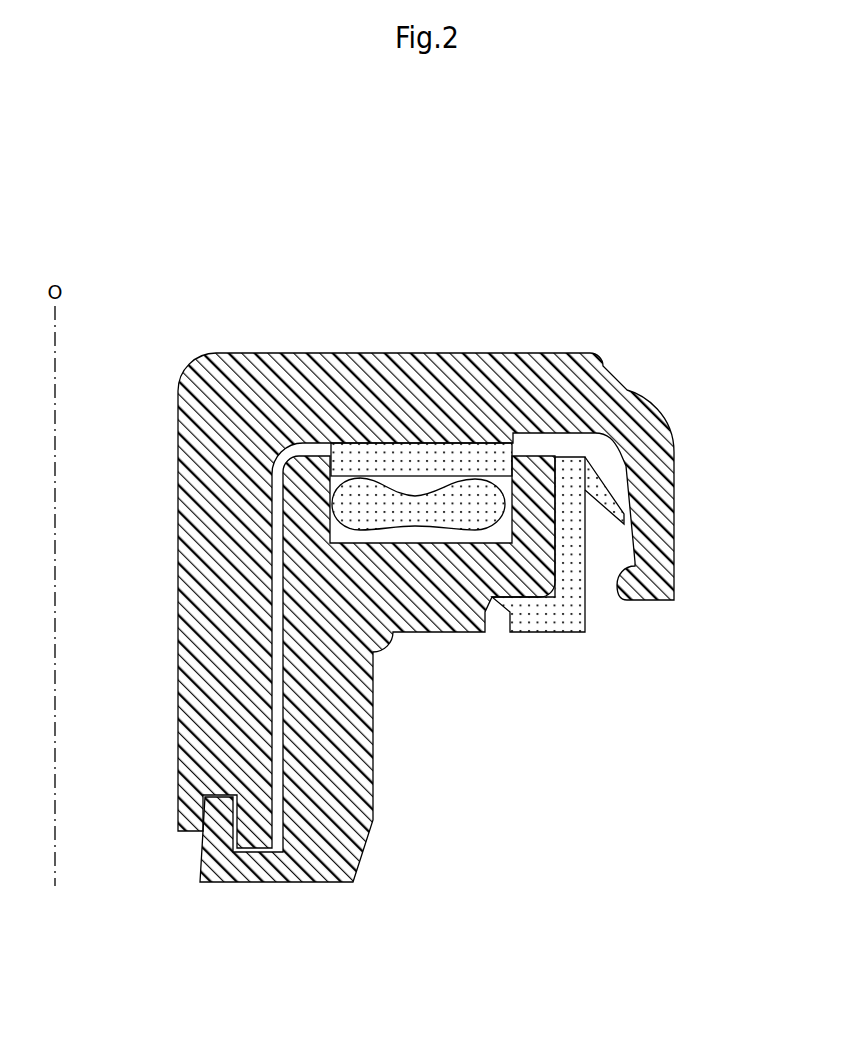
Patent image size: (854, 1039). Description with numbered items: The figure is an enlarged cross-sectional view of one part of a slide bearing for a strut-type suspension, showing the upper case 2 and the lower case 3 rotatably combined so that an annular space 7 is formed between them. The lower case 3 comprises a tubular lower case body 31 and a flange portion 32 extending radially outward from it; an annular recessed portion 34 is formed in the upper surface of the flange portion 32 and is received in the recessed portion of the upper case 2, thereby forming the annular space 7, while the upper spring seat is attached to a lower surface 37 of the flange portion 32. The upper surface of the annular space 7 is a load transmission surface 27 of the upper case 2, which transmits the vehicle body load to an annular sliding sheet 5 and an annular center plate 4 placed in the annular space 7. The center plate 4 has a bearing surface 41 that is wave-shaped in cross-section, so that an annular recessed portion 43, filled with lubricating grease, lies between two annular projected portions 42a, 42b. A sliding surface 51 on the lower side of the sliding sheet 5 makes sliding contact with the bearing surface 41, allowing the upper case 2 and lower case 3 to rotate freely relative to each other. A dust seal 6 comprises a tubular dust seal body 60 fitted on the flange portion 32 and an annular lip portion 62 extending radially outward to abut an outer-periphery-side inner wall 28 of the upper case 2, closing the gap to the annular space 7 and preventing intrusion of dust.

The upper case 2 is at (361, 443).
The lower case 3 is at (364, 852).
The center plate 4 is at (373, 533).
The sliding sheet 5 is at (567, 355).
The dust seal 6 is at (567, 633).
The annular space 7 is at (534, 436).
The load transmission surface 27 is at (417, 486).
The outer-periphery-side inner wall 28 is at (618, 482).
The lower case body 31 is at (374, 777).
The flange portion 32 is at (636, 566).
The annular recessed portion 34 is at (329, 442).
The lower surface 37 is at (440, 635).
The bearing surface 41 is at (495, 443).
The annular projected portion 42a is at (442, 376).
The annular projected portion 42b is at (337, 482).
The annular recessed portion 43 is at (448, 443).
The sliding surface 51 is at (448, 443).
The dust seal body 60 is at (586, 605).
The lip portion 62 is at (614, 488).